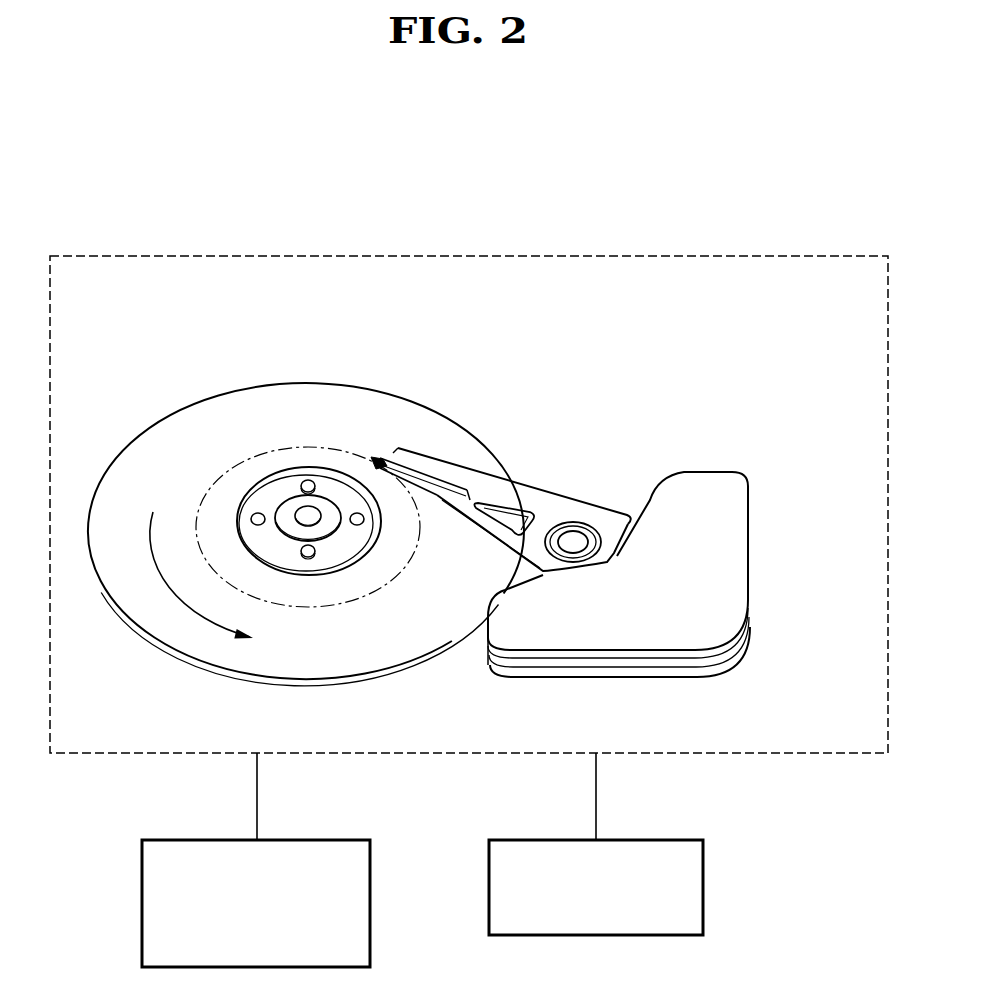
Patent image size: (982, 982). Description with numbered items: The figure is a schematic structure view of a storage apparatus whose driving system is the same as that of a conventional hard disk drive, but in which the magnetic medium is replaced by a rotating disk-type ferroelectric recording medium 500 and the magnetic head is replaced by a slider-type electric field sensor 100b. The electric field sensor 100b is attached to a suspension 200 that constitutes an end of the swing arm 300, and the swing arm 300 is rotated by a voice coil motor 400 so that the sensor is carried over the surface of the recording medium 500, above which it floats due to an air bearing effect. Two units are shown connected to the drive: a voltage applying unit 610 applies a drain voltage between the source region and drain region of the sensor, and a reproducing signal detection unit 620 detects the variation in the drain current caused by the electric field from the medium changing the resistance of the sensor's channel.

The electric field sensor 100b is at (381, 447).
The suspension 200 is at (422, 496).
The swing arm 300 is at (518, 492).
The voice coil motor 400 is at (766, 528).
The recording medium 500 is at (258, 438).
The voltage applying unit 610 is at (703, 887).
The reproducing signal detection unit 620 is at (142, 901).